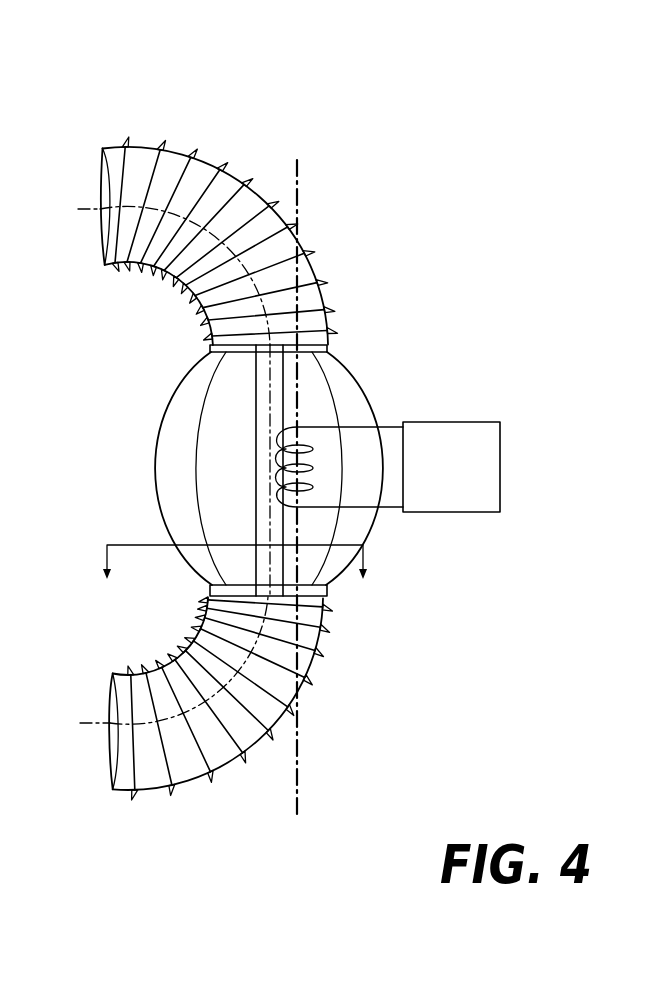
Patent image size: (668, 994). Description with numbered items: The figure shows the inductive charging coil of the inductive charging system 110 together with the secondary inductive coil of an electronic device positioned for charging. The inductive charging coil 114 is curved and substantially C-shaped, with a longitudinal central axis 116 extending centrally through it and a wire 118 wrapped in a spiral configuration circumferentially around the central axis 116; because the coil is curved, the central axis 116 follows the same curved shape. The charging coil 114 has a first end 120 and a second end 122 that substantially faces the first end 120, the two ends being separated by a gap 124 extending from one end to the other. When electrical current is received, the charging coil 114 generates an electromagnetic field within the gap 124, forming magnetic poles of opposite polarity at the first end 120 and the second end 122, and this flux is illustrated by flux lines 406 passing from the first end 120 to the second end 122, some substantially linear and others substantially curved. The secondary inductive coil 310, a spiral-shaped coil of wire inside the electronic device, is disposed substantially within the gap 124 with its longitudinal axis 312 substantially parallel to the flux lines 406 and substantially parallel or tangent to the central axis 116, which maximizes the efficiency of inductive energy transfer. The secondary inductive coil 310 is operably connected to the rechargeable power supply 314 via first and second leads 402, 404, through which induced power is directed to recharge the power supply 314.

The inductive charging system 110 is at (560, 162).
The inductive charging coil 114 is at (142, 124).
The longitudinal central axis 116 is at (101, 208).
The wire 118 is at (193, 157).
The first end 120 is at (226, 584).
The second end 122 is at (238, 353).
The gap 124 is at (341, 388).
The secondary inductive coil 310 is at (283, 449).
The longitudinal axis 312 is at (298, 168).
The rechargeable power supply 314 is at (502, 437).
The first lead 402 is at (388, 508).
The second lead 404 is at (390, 427).
The flux lines 406 is at (202, 518).